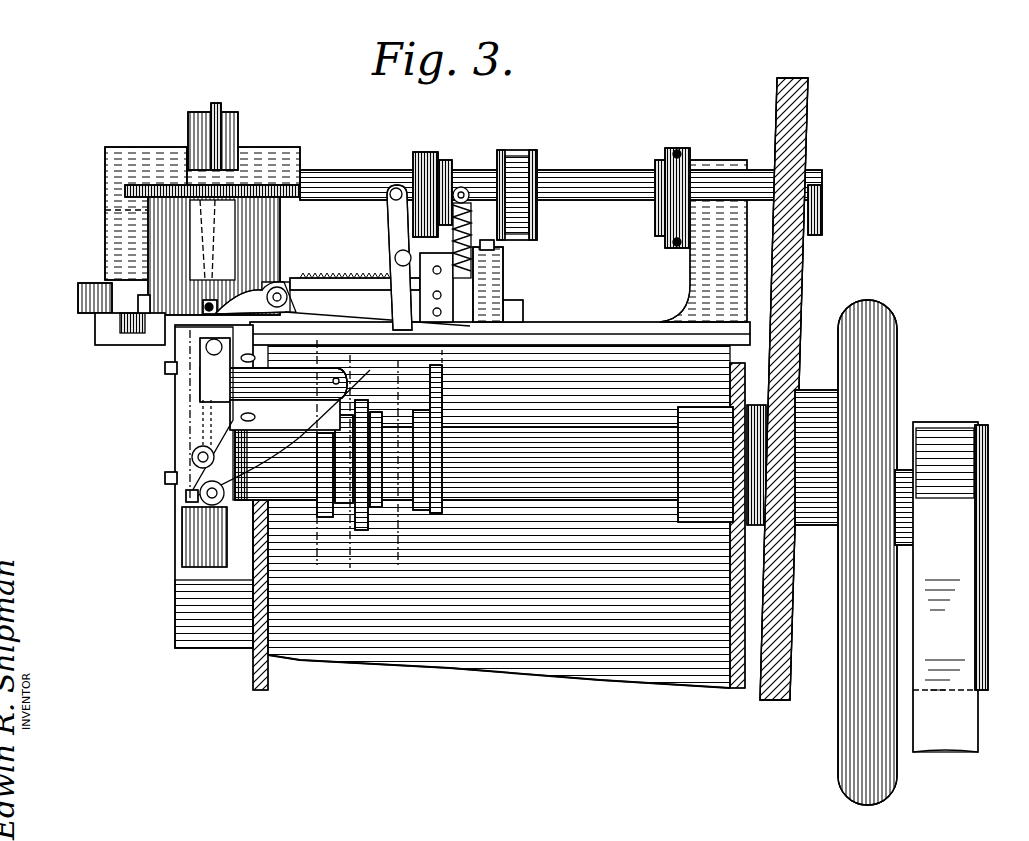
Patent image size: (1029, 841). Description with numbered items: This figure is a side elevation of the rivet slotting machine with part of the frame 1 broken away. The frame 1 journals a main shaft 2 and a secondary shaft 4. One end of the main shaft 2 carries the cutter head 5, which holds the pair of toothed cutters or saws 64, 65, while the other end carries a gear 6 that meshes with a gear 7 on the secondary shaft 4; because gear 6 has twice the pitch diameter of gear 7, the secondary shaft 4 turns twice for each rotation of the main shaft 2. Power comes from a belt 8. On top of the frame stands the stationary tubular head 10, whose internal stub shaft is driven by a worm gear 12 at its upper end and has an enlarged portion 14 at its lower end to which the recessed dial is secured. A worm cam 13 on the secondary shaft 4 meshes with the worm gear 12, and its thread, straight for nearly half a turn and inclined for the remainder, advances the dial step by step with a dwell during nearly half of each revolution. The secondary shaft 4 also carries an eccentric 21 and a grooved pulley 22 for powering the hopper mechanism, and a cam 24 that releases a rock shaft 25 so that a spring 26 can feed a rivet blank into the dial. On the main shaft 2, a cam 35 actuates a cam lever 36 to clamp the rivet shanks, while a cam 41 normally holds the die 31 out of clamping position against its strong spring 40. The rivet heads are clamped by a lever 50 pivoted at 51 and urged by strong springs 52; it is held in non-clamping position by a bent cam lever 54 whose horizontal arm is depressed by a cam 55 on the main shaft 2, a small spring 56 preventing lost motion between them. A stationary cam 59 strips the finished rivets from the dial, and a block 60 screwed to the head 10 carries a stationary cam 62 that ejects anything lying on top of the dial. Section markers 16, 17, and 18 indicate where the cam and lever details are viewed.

The frame of the machine 1 is at (730, 552).
The main shaft 2 is at (560, 500).
The secondary shaft 4 is at (594, 178).
The cutter head 5 is at (182, 550).
The gear 6 is at (789, 702).
The gear 7 is at (810, 142).
The belt 8 is at (976, 716).
The stationary tubular head 10 is at (279, 252).
The worm gear 12 is at (118, 190).
The worm cam 13 is at (220, 108).
The enlarged portion 14 is at (356, 379).
The section line 16 is at (419, 404).
The section line 17 is at (364, 567).
The section line 18 is at (207, 330).
The eccentric 21 is at (521, 152).
The grooved pulley 22 is at (684, 156).
The cam 24 is at (433, 155).
The rock shaft 25 is at (392, 258).
The spring 26 is at (347, 292).
The die 31 is at (214, 330).
The cam 35 is at (366, 500).
The cam lever 36 is at (368, 345).
The spring 40 is at (208, 303).
The cam 41 is at (326, 518).
The lever 50 is at (330, 283).
The pivot 51 is at (281, 292).
The springs 52 is at (470, 240).
The bent cam lever 54 is at (442, 400).
The cam 55 is at (432, 512).
The small spring 56 is at (430, 290).
The stationary cam 59 is at (140, 342).
The block 60 is at (138, 300).
The stationary cam 62 is at (140, 300).
The toothed cutter 64 is at (192, 434).
The toothed cutter 65 is at (192, 457).